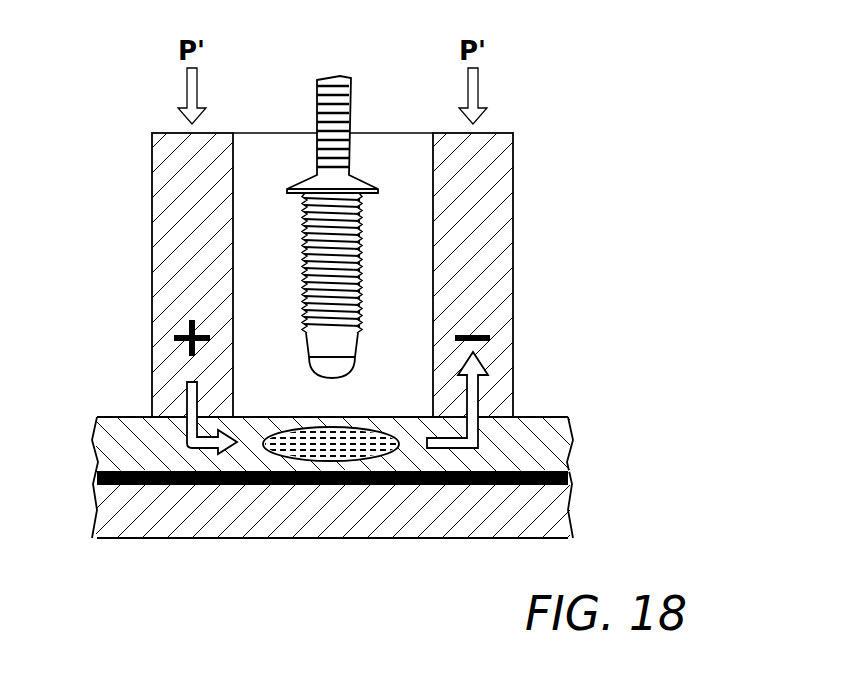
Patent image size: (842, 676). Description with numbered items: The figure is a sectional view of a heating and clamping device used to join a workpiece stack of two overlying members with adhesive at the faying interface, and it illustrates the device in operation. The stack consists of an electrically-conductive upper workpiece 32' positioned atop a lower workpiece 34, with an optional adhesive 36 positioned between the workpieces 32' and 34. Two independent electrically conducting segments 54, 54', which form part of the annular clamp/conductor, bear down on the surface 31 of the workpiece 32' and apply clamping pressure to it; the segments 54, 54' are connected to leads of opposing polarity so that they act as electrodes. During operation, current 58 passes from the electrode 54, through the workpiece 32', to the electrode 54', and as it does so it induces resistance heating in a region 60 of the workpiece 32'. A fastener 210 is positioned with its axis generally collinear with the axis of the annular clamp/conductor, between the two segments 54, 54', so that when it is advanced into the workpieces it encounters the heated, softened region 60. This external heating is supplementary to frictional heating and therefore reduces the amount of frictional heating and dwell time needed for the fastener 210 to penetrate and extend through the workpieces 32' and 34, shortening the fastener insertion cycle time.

The electrically conducting segment 54 is at (150, 270).
The electrically conducting segment 54' is at (521, 269).
The fastener 210 is at (358, 89).
The surface 31 is at (355, 473).
The workpiece 32' is at (363, 441).
The adhesive 36 is at (567, 478).
The workpiece 34 is at (540, 507).
The current 58 is at (213, 450).
The region 60 is at (345, 447).